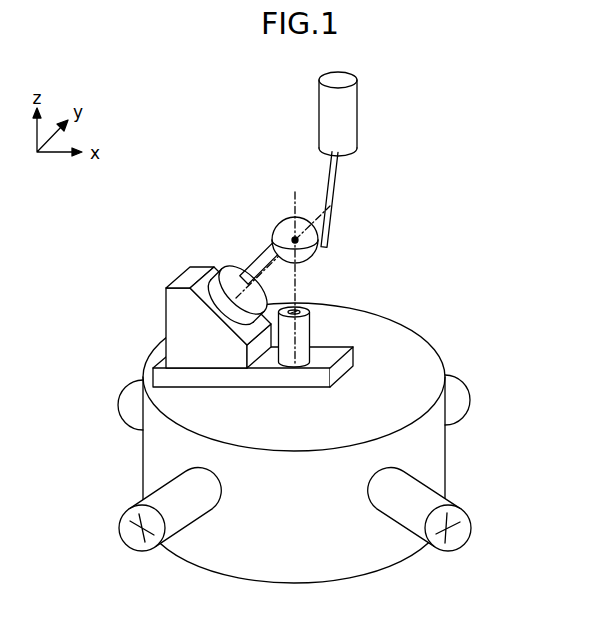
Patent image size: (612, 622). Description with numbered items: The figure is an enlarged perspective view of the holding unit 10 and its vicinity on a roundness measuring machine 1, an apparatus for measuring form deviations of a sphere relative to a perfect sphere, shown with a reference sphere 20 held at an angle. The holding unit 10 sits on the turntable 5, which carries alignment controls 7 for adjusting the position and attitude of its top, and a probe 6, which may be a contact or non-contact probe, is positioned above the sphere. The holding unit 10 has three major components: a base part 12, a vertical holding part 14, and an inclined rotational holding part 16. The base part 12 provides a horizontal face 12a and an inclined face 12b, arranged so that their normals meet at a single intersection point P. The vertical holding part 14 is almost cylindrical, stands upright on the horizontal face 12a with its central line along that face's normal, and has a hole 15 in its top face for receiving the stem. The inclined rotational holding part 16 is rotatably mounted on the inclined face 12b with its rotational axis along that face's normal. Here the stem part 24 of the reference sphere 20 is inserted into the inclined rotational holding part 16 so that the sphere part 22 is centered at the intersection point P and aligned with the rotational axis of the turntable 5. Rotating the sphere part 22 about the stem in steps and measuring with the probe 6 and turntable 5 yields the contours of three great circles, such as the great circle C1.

The roundness measuring machine 1 is at (516, 188).
The turntable 5 is at (382, 408).
The probe 6 is at (337, 211).
The alignment controls 7 is at (471, 533).
The holding unit 10 is at (158, 296).
The base part 12 is at (185, 285).
The horizontal face 12a is at (313, 362).
The inclined face 12b is at (198, 298).
The vertical holding part 14 is at (372, 324).
The hole 15 is at (302, 308).
The inclined rotational holding part 16 is at (232, 284).
The reference sphere 20 is at (283, 137).
The sphere part 22 is at (283, 230).
The stem part 24 is at (260, 267).
The intersection point P is at (300, 217).
The great circle C1 is at (318, 256).